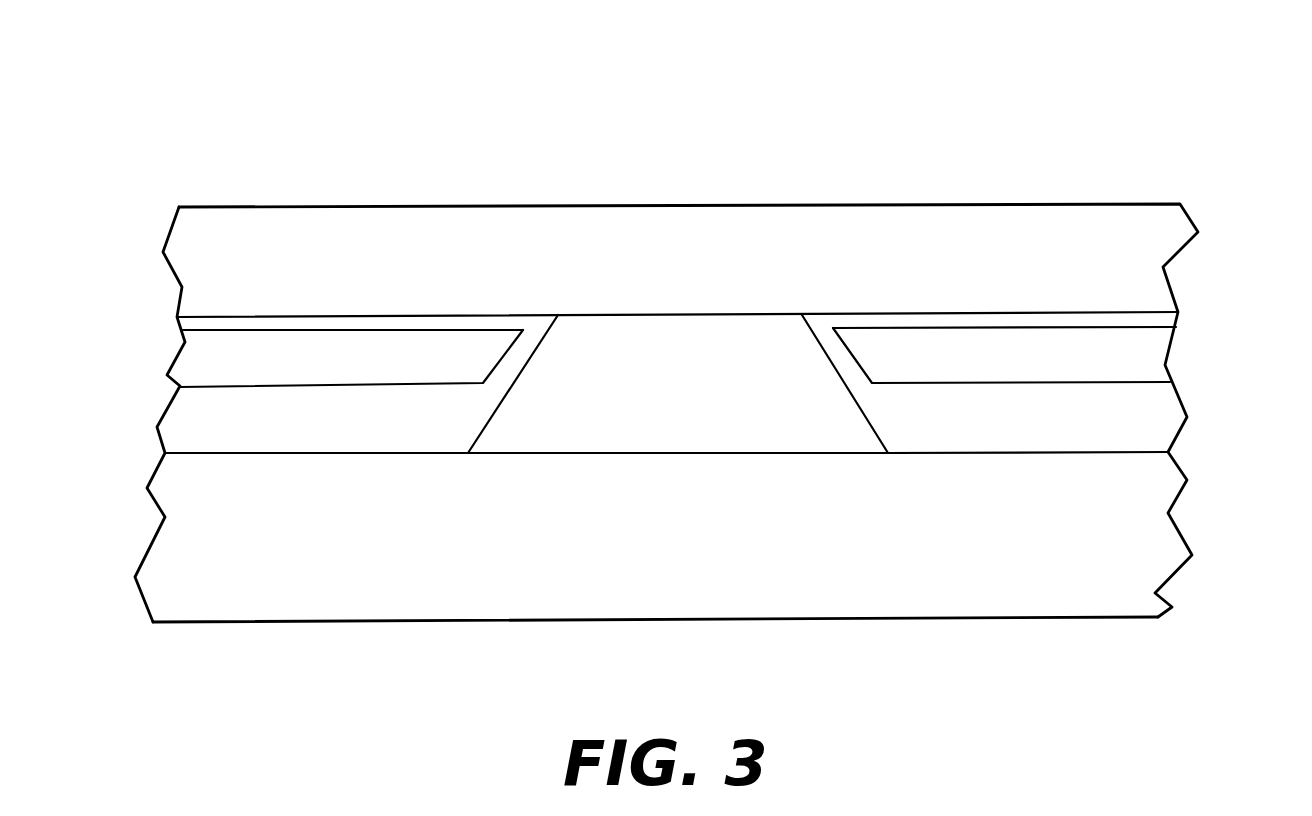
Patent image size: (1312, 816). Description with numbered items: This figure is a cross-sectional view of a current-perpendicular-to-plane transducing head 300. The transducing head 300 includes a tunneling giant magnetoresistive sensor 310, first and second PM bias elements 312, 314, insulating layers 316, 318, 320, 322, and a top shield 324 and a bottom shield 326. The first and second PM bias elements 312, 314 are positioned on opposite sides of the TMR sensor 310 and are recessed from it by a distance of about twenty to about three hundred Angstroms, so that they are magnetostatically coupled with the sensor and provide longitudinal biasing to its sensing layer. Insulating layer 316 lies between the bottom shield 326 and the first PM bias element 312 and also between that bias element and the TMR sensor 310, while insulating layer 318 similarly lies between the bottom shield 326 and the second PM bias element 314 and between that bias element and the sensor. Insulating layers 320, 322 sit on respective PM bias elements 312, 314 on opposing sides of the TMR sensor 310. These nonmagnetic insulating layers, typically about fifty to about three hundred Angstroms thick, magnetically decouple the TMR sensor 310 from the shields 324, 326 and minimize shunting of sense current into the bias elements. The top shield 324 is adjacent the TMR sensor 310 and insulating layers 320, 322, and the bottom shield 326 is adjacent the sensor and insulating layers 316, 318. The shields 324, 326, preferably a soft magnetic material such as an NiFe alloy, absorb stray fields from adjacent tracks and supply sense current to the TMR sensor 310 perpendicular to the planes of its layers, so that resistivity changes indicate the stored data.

The current-perpendicular-to-plane transducing head 300 is at (396, 84).
The tunneling giant magnetoresistive sensor 310 is at (663, 377).
The first PM bias element 312 is at (190, 367).
The second PM bias element 314 is at (1118, 352).
The insulating layer 316 is at (193, 425).
The insulating layer 318 is at (1103, 418).
The insulating layer 320 is at (243, 322).
The insulating layer 322 is at (1122, 320).
The top shield 324 is at (1132, 253).
The bottom shield 326 is at (240, 555).